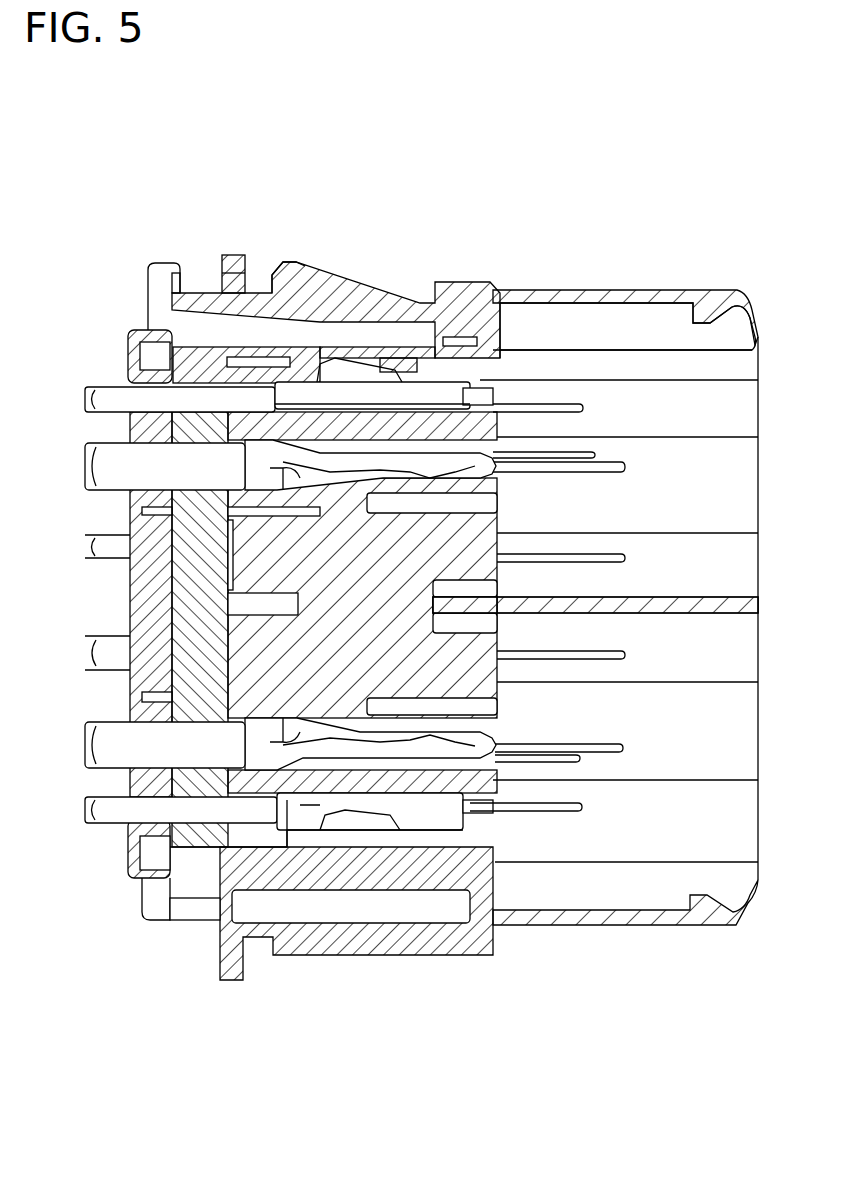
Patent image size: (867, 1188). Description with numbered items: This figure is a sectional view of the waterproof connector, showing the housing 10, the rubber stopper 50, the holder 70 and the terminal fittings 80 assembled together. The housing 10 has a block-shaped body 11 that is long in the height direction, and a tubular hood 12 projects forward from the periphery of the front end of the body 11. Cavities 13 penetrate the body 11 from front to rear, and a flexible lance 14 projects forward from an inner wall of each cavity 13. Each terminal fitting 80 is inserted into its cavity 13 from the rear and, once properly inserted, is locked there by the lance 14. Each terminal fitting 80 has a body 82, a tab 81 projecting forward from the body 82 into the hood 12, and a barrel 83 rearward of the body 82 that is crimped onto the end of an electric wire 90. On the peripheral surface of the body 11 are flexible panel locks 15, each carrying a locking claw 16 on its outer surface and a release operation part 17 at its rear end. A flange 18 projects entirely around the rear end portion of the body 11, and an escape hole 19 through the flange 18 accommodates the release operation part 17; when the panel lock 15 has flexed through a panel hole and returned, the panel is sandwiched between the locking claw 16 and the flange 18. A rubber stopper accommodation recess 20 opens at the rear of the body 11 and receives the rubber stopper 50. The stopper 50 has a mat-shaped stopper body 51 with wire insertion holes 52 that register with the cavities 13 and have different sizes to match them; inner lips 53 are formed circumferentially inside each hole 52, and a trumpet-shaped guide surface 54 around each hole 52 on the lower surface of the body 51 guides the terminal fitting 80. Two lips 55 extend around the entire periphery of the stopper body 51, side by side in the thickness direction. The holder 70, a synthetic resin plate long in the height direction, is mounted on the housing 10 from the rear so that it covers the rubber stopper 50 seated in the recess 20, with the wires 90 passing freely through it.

The housing 10 is at (560, 290).
The housing body 11 is at (337, 923).
The hood 12 is at (643, 922).
The cavity 13 is at (422, 850).
The lance 14 is at (377, 833).
The panel lock 15 is at (372, 300).
The locking claw 16 is at (300, 270).
The release operation part 17 is at (193, 302).
The flange 18 is at (243, 283).
The escape hole 19 is at (250, 283).
The rubber stopper accommodation recess 20 is at (190, 848).
The rubber stopper 50 is at (165, 545).
The stopper body 51 is at (180, 622).
The wire insertion hole 52 is at (197, 487).
The inner lip 53 is at (195, 393).
The guide surface 54 is at (157, 820).
The lip 55 is at (190, 357).
The holder 70 is at (130, 694).
The terminal fitting 80 is at (430, 382).
The tab 81 is at (568, 807).
The terminal fitting body 82 is at (460, 820).
The barrel 83 is at (347, 813).
The electric wire 90 is at (88, 818).